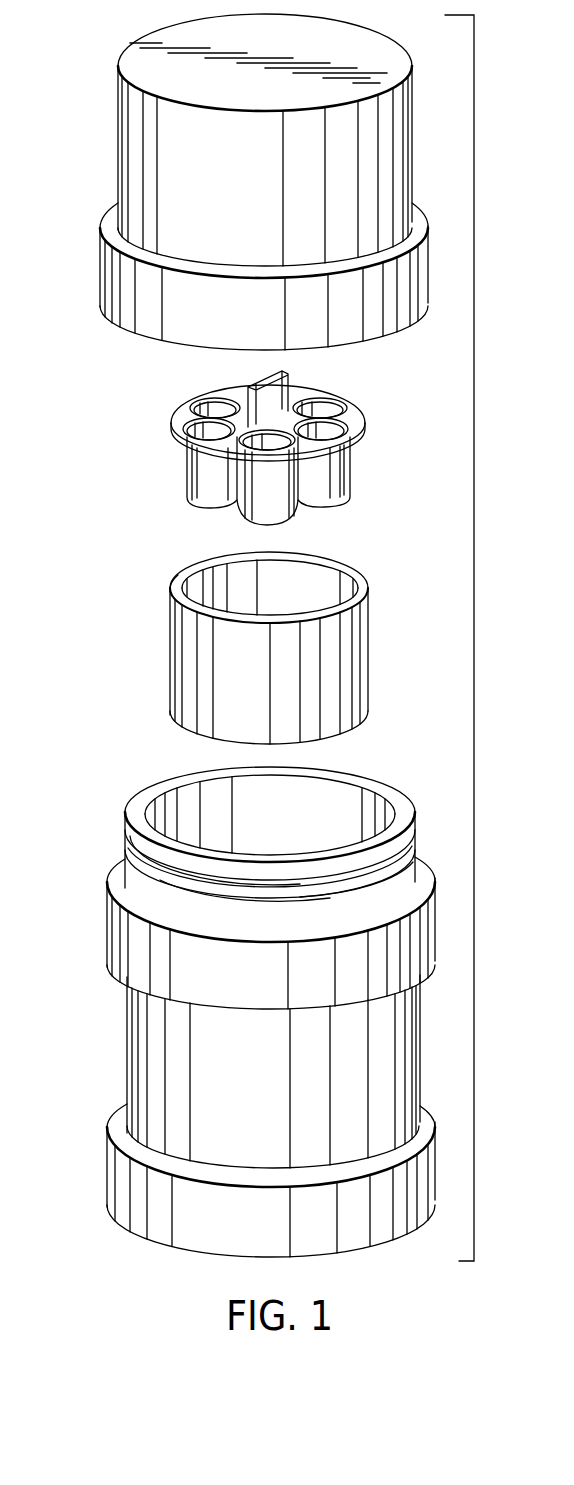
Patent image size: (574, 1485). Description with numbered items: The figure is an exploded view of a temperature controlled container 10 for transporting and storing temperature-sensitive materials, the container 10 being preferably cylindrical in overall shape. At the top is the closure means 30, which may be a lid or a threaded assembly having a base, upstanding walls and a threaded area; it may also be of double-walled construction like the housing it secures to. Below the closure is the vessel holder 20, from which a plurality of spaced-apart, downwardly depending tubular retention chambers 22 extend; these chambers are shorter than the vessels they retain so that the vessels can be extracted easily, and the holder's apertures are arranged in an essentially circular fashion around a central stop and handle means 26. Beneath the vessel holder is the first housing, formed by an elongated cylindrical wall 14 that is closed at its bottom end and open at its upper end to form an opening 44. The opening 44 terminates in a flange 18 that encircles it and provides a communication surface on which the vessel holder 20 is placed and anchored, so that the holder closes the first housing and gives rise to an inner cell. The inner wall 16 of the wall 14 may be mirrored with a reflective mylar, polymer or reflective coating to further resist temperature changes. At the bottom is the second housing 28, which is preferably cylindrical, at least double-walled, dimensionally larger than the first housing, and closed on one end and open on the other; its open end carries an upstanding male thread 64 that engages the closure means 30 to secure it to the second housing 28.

The temperature controlled container 10 is at (490, 508).
The wall 14 is at (343, 693).
The inner wall 16 is at (297, 577).
The flange 18 is at (363, 587).
The vessel holder 20 is at (362, 426).
The tubular retention chamber 22 is at (323, 483).
The central stop and handle means 26 is at (288, 374).
The second housing 28 is at (127, 1014).
The closure means 30 is at (170, 155).
The opening 44 is at (183, 590).
The upstanding male thread 64 is at (413, 850).